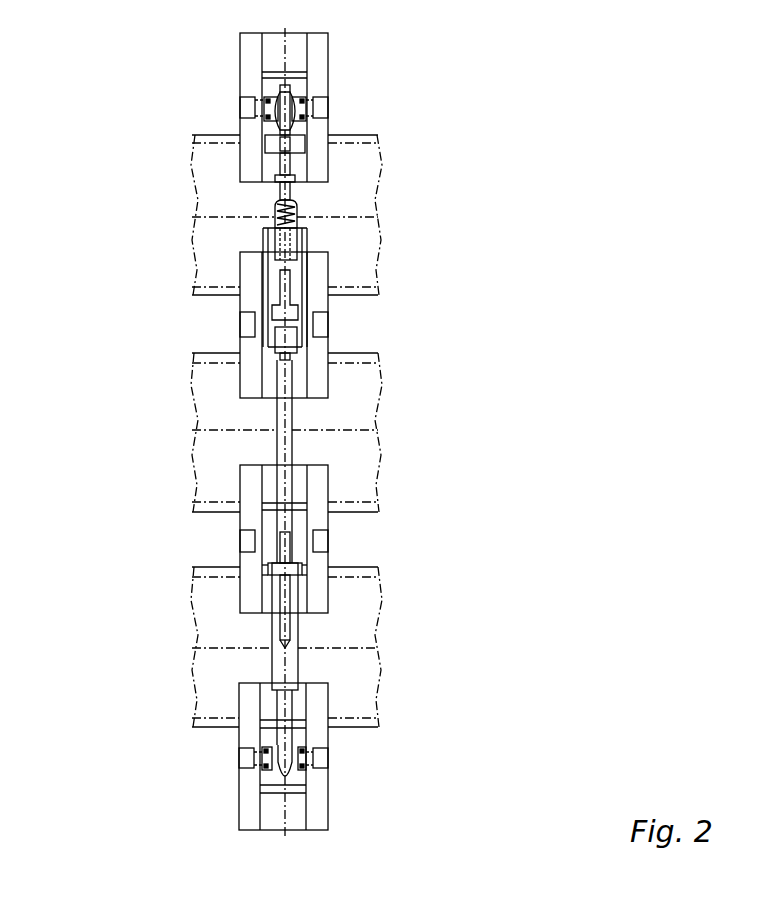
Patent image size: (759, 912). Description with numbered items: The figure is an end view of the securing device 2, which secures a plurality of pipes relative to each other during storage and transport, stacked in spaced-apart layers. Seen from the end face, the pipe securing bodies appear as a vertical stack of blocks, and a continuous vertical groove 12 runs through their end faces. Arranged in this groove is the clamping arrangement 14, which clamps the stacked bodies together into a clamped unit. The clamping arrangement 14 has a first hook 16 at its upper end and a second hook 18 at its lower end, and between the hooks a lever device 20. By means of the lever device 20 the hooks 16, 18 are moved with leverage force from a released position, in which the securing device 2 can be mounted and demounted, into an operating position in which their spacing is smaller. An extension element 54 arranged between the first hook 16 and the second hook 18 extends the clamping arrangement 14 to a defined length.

The securing device 2 is at (350, 432).
The continuous vertical groove 12 is at (322, 70).
The clamping arrangement 14 is at (295, 147).
The first hook 16 is at (270, 123).
The second hook 18 is at (263, 762).
The lever device 20 is at (282, 307).
The extension element 54 is at (282, 447).